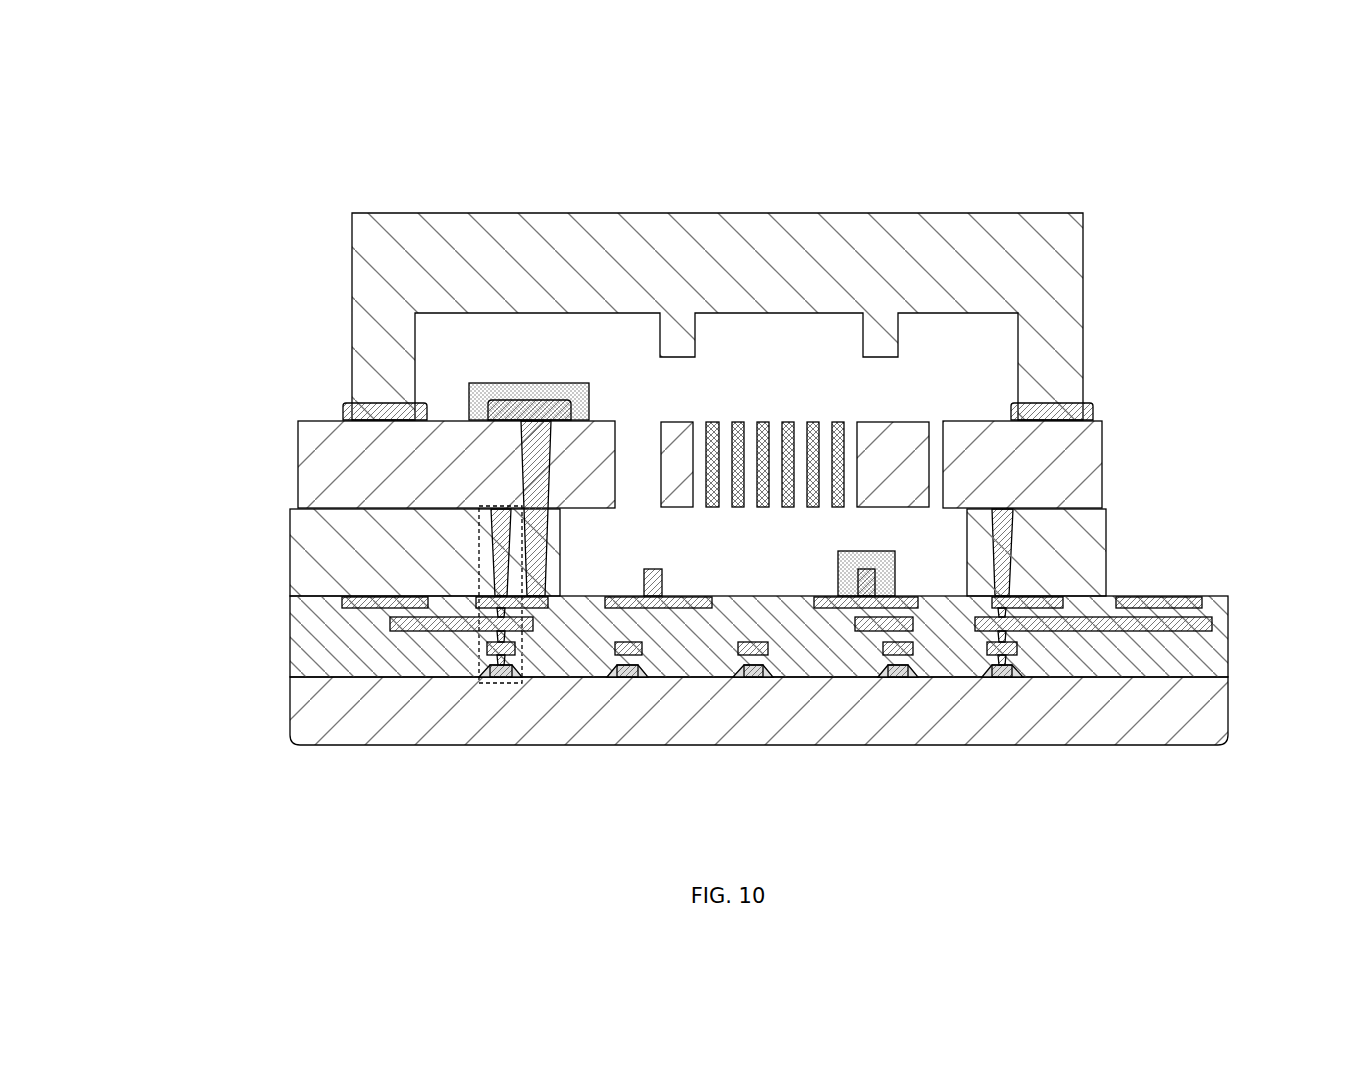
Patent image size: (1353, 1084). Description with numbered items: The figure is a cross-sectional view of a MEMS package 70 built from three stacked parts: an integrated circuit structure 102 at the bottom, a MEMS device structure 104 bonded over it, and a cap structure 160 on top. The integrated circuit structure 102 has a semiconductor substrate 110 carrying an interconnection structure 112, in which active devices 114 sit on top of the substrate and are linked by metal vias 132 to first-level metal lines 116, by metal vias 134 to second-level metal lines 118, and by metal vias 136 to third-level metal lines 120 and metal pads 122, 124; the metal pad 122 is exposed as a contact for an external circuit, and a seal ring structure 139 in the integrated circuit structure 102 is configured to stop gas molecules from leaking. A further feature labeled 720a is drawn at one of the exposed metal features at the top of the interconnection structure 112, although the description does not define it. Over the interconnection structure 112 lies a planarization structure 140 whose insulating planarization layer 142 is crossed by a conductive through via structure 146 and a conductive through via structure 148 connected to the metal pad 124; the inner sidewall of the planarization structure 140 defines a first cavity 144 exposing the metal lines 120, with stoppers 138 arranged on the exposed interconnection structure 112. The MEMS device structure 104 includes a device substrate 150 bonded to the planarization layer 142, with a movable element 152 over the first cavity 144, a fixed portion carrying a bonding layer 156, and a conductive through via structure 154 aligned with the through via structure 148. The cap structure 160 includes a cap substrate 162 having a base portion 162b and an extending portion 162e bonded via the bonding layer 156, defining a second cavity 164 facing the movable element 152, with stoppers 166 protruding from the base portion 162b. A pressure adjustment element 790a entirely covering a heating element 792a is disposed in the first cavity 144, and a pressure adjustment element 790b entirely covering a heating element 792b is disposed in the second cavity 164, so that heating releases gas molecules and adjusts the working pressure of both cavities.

The MEMS package 70 is at (185, 153).
The cap structure 160 is at (148, 220).
The cap substrate 162 is at (385, 230).
The base portion 162b is at (324, 220).
The extending portion 162e is at (324, 317).
The second cavity 164 is at (826, 388).
The stoppers 166 is at (676, 336).
The bonding layer 156 is at (1093, 408).
The pressure adjustment element 790b is at (540, 400).
The heating element 792b is at (560, 412).
The MEMS device structure 104 is at (148, 407).
The conductive through via structure 154 is at (535, 465).
The device substrate 150 is at (1075, 467).
The movable element 152 is at (749, 422).
The conductive through via structure 148 is at (538, 532).
The integrated circuit structure 102 is at (148, 510).
The planarization structure 140 is at (234, 512).
The conductive through via structure 146 is at (500, 530).
The planarization layer 142 is at (1080, 535).
The stoppers 138 is at (655, 570).
The pressure adjustment element 790a is at (865, 558).
The heating element 792a is at (868, 585).
The first cavity 144 is at (781, 533).
The semiconductor substrate 110 is at (1203, 720).
The interconnection structure 112 is at (234, 597).
The metal pad 122 is at (1185, 603).
The metal lines 120 is at (360, 602).
The metal pad 124 is at (540, 602).
The conductive pad 720a is at (855, 600).
The metal lines 118 is at (1202, 623).
The metal lines 116 is at (1013, 648).
The active devices 114 is at (1028, 668).
The metal vias 134 is at (490, 637).
The seal ring structure 139 is at (493, 680).
The metal vias 136 is at (998, 612).
The metal vias 132 is at (1000, 670).